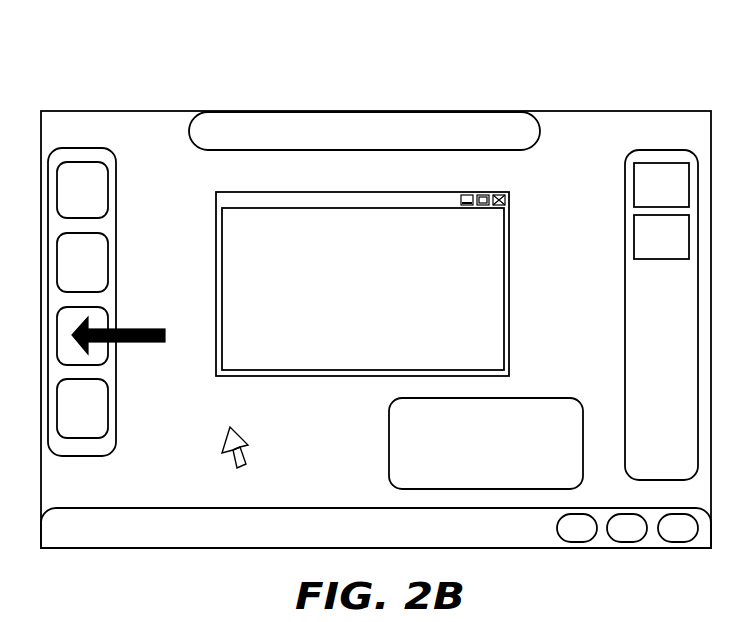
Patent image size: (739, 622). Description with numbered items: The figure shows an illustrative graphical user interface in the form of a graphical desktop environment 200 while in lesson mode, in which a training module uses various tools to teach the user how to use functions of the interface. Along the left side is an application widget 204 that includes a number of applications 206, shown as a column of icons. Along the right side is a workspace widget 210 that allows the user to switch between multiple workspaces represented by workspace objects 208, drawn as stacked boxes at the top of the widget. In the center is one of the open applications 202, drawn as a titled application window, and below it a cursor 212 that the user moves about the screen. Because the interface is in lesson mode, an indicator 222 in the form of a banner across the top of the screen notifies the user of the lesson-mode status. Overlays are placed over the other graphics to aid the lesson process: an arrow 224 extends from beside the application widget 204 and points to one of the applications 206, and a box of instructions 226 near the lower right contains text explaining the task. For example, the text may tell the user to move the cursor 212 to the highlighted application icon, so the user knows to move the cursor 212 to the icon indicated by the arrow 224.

The graphical desktop environment 200 is at (92, 86).
The open applications 202 is at (362, 283).
The application widget 204 is at (117, 180).
The applications 206 is at (93, 265).
The workspace objects 208 is at (641, 187).
The workspace widget 210 is at (624, 337).
The cursor 212 is at (238, 433).
The indicator 222 is at (364, 131).
The arrow 224 is at (148, 344).
The instructions 226 is at (486, 443).